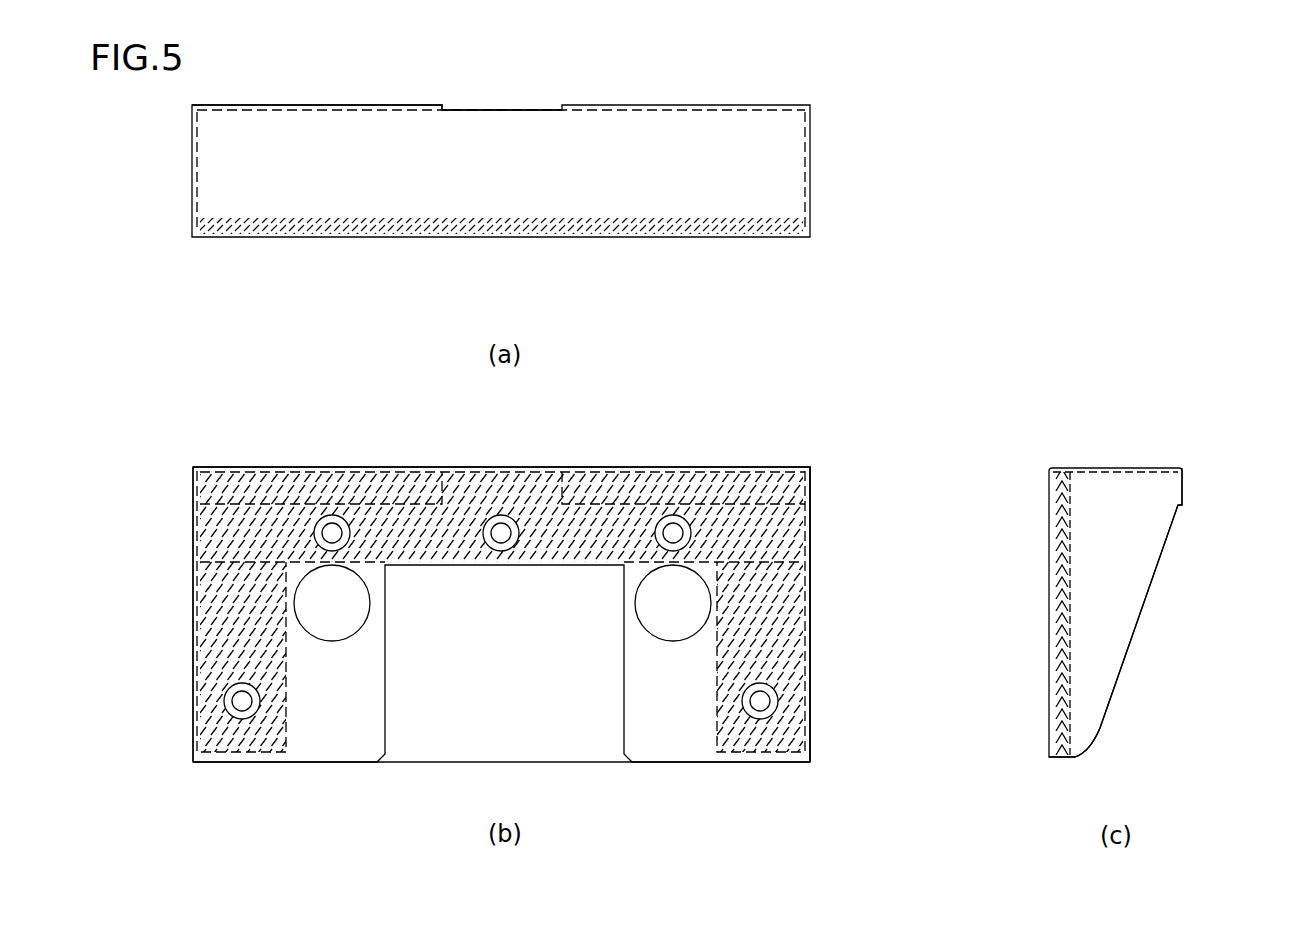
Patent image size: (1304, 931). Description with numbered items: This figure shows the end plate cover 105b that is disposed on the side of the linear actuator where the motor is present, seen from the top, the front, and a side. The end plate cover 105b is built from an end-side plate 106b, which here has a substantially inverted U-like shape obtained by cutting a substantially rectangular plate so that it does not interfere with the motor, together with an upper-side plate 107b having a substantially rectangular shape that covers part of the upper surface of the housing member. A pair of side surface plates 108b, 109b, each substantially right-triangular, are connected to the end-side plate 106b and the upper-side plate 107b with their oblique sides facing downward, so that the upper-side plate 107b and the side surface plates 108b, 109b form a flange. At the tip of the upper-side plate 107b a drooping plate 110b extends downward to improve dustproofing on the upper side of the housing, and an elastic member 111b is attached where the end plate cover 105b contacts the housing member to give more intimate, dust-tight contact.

The end plate cover 105b is at (819, 419).
The end-side plate 106b is at (632, 238).
The upper-side plate 107b is at (676, 136).
The side surface plate 108b is at (810, 160).
The side surface plate 109b is at (192, 158).
The drooping plate 110b is at (386, 104).
The elastic member 111b is at (447, 234).